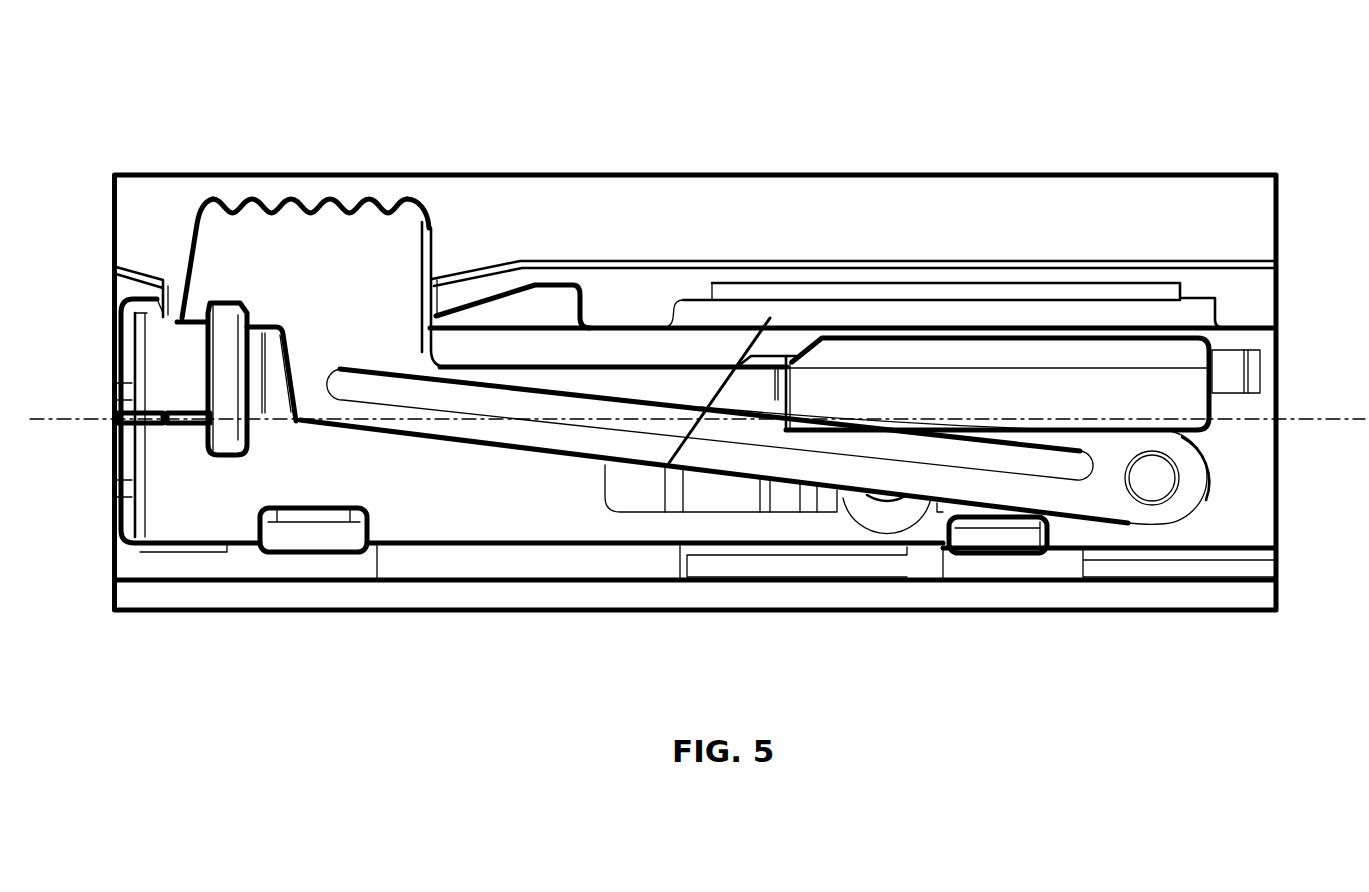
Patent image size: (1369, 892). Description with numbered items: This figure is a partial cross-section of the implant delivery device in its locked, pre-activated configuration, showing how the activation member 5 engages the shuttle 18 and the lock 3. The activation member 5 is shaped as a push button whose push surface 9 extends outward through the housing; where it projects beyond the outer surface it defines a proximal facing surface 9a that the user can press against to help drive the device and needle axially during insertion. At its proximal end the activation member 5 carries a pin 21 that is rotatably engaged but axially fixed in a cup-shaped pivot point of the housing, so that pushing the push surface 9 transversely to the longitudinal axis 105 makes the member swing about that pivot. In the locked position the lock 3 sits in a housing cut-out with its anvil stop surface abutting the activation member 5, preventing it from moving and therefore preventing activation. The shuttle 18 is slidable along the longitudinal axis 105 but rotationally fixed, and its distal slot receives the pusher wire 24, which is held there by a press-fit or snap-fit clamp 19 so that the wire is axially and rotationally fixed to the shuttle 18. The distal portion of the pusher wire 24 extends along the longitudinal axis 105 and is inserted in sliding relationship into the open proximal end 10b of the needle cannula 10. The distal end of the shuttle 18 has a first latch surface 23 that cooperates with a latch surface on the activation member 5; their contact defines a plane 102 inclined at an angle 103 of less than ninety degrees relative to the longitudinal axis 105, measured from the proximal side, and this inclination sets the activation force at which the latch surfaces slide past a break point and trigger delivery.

The lock 3 is at (223, 433).
The activation member 5 is at (368, 205).
The push surface 9 is at (332, 205).
The proximal facing surface 9a is at (440, 248).
The needle cannula 10 is at (142, 416).
The open proximal end 10b is at (164, 424).
The shuttle 18 is at (1038, 393).
The clamp 19 is at (903, 515).
The pin 21 is at (1150, 490).
The first latch surface 23 is at (745, 365).
The pusher wire 24 is at (728, 412).
The plane 102 is at (739, 352).
The angle 103 is at (750, 417).
The longitudinal axis 105 is at (1306, 412).